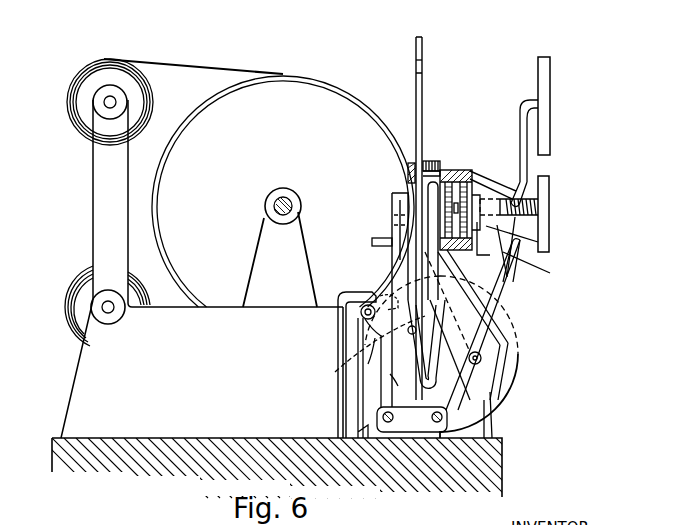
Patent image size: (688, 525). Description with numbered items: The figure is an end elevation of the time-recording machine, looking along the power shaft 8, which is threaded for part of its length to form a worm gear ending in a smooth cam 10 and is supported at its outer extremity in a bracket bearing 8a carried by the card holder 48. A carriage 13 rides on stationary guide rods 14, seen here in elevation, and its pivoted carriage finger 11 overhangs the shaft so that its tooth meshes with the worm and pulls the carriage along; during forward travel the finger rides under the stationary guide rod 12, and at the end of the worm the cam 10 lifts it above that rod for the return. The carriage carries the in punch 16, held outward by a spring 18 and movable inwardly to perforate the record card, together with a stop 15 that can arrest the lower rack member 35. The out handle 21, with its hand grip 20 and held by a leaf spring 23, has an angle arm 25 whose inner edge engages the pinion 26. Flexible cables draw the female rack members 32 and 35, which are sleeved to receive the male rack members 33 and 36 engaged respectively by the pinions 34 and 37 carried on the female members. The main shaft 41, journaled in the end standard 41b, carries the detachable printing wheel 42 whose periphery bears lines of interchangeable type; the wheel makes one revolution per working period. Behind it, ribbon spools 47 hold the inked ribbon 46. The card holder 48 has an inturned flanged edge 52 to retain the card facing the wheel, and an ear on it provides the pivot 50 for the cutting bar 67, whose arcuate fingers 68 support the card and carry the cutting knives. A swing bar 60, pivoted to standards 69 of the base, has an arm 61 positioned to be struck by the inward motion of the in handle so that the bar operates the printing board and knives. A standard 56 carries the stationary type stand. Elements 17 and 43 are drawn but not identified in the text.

The power shaft 8 is at (380, 361).
The bracket bearing 8a is at (405, 336).
The smooth cam 10 is at (380, 310).
The carriage finger 11 is at (372, 292).
The guide rod 12 is at (350, 292).
The carriage 13 is at (399, 340).
The guide rods 14 is at (412, 419).
The stop 15 is at (452, 256).
The punch 16 is at (516, 229).
The plate 17 is at (550, 204).
The spring 18 is at (528, 199).
The hand grip 20 is at (551, 73).
The out handle 21 is at (518, 137).
The leaf spring 23 is at (424, 380).
The angle arm 25 is at (494, 181).
The pinion 26 is at (432, 162).
The rack member 32 is at (471, 172).
The rack member 33 is at (456, 171).
The pinion 34 is at (440, 204).
The rack member 35 is at (458, 308).
The rack member 36 is at (522, 252).
The pinion 37 is at (506, 234).
The main shaft 41 is at (264, 208).
The standard 41b is at (202, 369).
The printing wheel 42 is at (283, 191).
The rim 43 is at (333, 82).
The inked ribbon 46 is at (204, 58).
The ribbon spools 47 is at (78, 94).
The card holder 48 is at (424, 98).
The pivot 50 is at (408, 186).
The inturned flanged edge 52 is at (415, 52).
The standard 56 is at (378, 238).
The swing bar 60 is at (522, 369).
The arm 61 is at (550, 273).
The cutting bar 67 is at (450, 350).
The arcuate finger 68 is at (388, 375).
The standards 69 is at (497, 417).